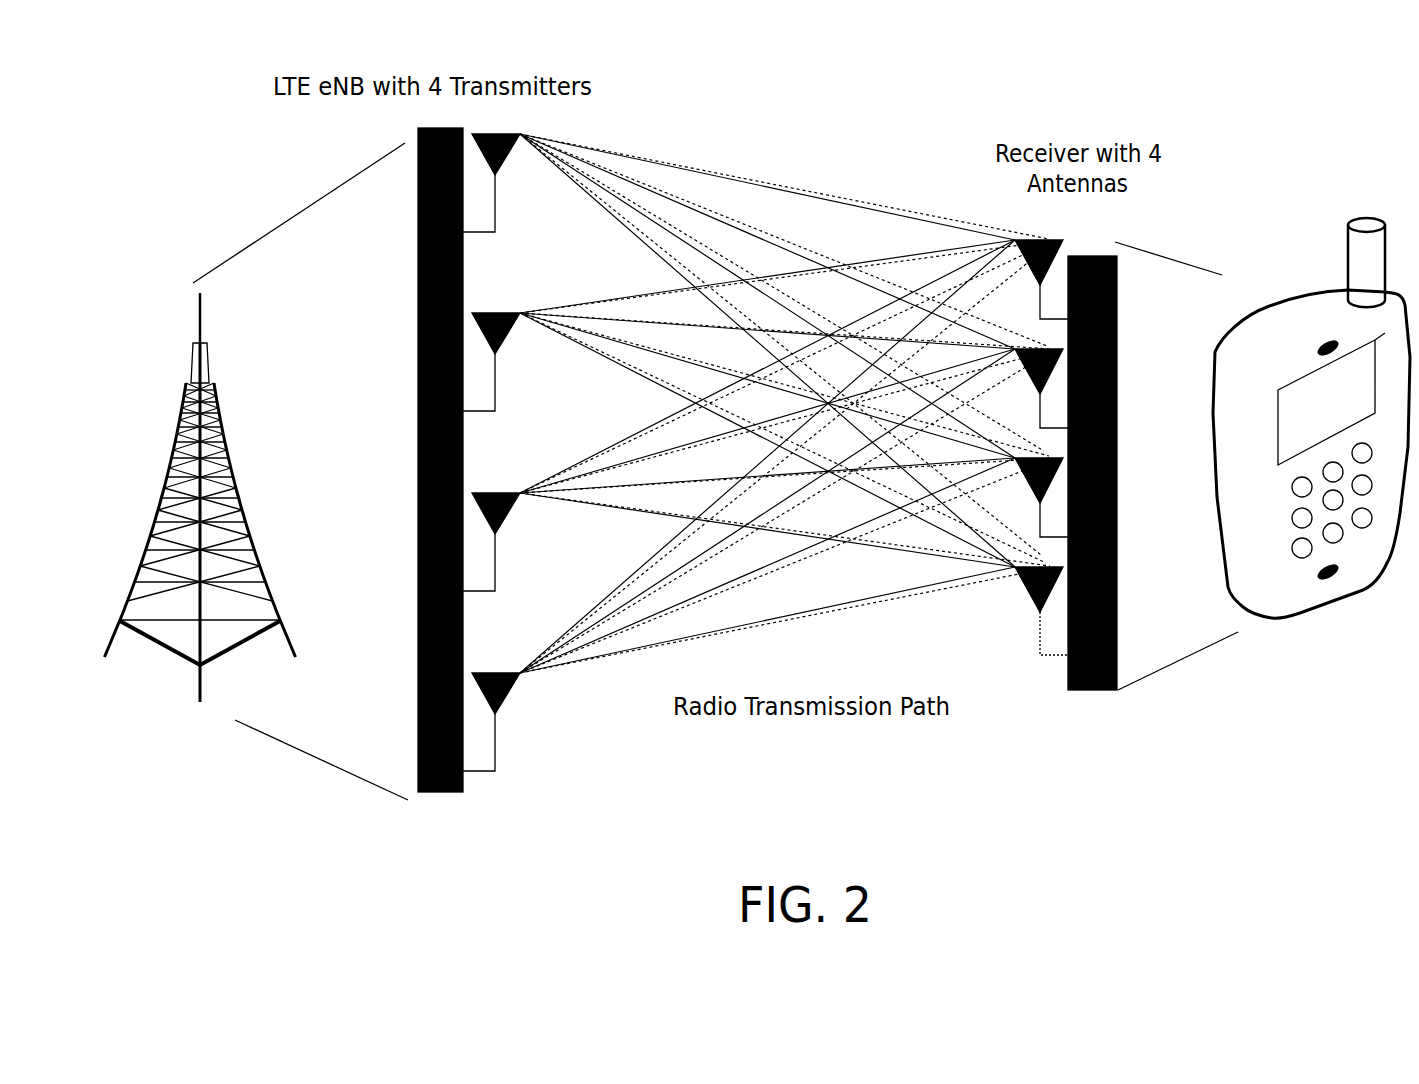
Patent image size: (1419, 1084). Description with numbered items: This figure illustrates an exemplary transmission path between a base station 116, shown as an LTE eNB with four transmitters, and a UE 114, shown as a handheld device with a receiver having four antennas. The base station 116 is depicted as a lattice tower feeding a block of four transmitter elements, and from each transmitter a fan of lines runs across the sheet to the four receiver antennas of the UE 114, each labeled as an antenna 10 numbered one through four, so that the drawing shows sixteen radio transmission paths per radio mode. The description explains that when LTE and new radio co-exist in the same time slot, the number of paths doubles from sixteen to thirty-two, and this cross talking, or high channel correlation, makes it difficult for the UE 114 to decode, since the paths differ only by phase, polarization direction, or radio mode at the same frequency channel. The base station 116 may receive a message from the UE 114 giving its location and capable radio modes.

The UE 114 is at (1290, 277).
The base station 116 is at (118, 622).
The receiver antenna (Ant10 1-4) 10 is at (1106, 447).